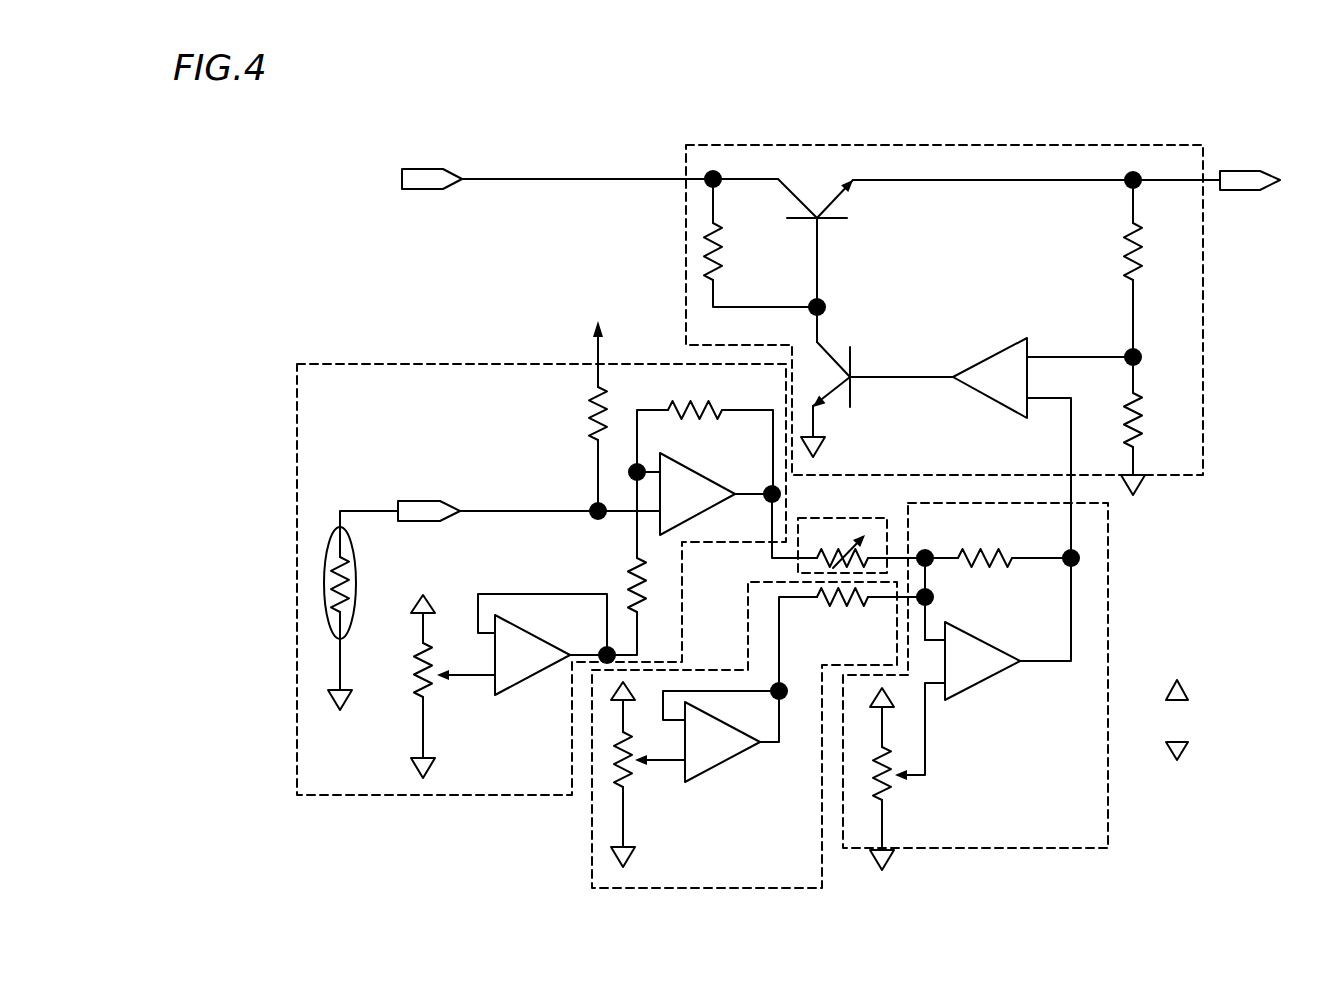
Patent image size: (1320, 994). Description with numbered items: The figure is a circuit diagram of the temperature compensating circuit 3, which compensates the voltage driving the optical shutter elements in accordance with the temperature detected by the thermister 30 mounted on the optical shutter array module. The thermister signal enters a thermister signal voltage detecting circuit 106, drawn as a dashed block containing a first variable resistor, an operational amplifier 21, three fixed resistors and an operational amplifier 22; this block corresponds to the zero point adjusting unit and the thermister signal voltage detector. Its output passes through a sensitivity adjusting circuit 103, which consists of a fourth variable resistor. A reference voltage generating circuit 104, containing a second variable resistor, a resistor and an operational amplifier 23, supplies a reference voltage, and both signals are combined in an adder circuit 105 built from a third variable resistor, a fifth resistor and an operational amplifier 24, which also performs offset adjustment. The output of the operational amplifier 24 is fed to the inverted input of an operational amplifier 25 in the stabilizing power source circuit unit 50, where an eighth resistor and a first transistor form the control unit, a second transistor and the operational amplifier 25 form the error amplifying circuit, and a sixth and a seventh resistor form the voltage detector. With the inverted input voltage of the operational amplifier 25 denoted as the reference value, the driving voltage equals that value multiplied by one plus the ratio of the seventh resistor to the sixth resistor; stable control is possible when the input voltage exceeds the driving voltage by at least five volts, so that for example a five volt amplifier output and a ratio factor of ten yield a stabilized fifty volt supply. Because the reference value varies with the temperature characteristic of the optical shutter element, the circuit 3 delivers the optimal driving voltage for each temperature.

The temperature compensating circuit 3 is at (283, 191).
The stabilizing power source circuit unit 50 is at (1152, 145).
The thermister signal voltage detecting circuit 106 is at (480, 364).
The sensitivity adjusting circuit 103 is at (878, 518).
The reference voltage generating circuit 104 is at (758, 752).
The adder circuit 105 is at (979, 696).
The temperature sensor (thermister) 30 is at (354, 562).
The operational amplifier 21 is at (535, 681).
The operational amplifier 22 is at (706, 473).
The operational amplifier 23 is at (727, 763).
The operation amplifier 24 is at (983, 684).
The operational amplifier 25 is at (979, 362).